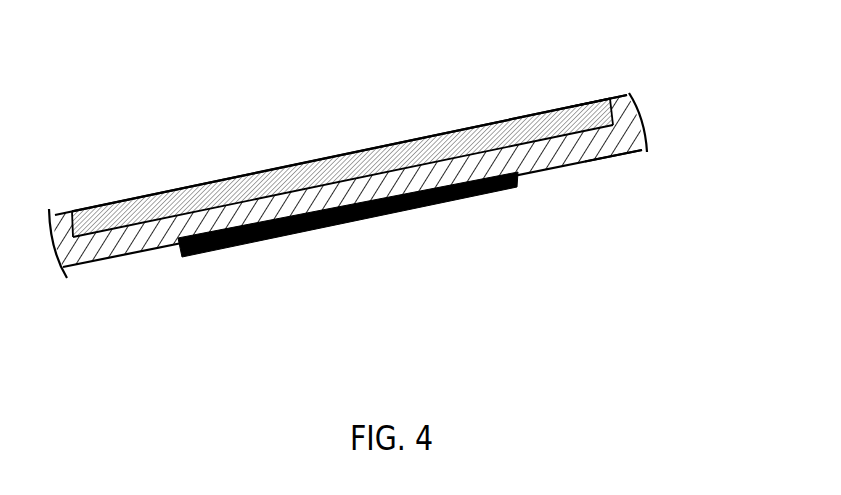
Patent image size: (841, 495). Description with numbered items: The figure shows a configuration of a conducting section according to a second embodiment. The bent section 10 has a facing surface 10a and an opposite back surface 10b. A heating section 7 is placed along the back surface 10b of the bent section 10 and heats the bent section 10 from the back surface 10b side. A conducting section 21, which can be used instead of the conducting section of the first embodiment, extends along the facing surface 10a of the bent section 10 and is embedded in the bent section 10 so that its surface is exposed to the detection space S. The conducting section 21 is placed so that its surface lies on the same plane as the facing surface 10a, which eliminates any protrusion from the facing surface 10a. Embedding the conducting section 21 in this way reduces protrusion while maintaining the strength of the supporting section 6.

The supporting section 6 is at (372, 142).
The detection space S is at (507, 82).
The heating section 7 is at (362, 220).
The bent section 10 is at (637, 120).
The facing surface 10a is at (623, 95).
The back surface 10b is at (641, 151).
The conducting section 21 is at (344, 154).